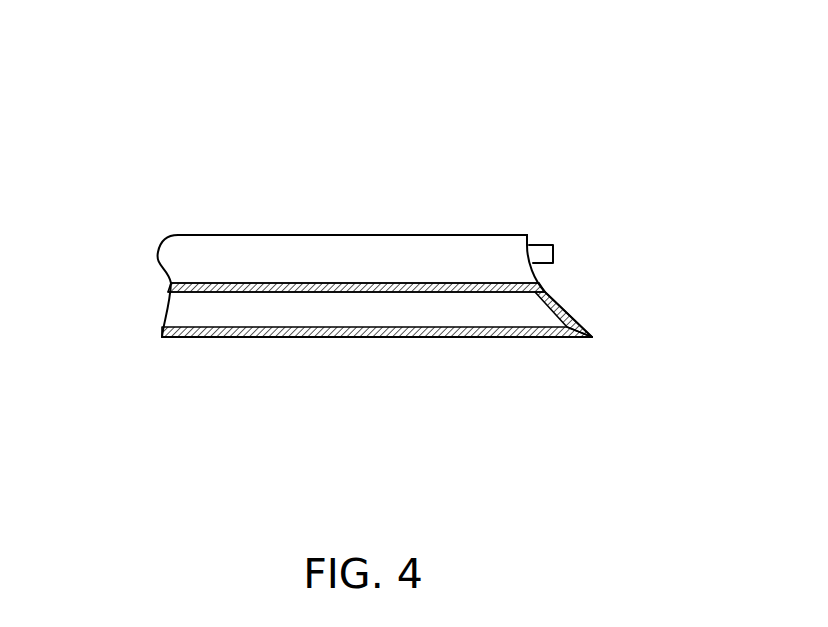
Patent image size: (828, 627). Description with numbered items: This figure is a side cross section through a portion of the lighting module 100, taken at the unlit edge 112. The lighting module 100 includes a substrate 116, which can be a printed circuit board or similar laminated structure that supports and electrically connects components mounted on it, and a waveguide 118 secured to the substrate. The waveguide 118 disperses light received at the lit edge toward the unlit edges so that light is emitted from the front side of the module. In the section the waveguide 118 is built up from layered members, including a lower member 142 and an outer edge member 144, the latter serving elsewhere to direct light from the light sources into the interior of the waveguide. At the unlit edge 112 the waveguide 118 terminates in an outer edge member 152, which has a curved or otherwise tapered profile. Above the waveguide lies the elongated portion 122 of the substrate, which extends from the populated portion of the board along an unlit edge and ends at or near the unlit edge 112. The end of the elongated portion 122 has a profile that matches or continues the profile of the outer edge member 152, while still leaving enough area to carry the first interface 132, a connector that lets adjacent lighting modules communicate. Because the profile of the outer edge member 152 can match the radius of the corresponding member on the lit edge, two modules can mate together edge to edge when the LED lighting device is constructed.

The lighting module 100 is at (535, 92).
The unlit edge 112 is at (670, 252).
The substrate 116 is at (201, 226).
The waveguide 118 is at (205, 350).
The elongated portion 122 is at (318, 252).
The first interface 132 is at (549, 230).
The lower member 142 is at (162, 333).
The outer edge member 144 is at (168, 287).
The outer edge member 152 is at (580, 300).